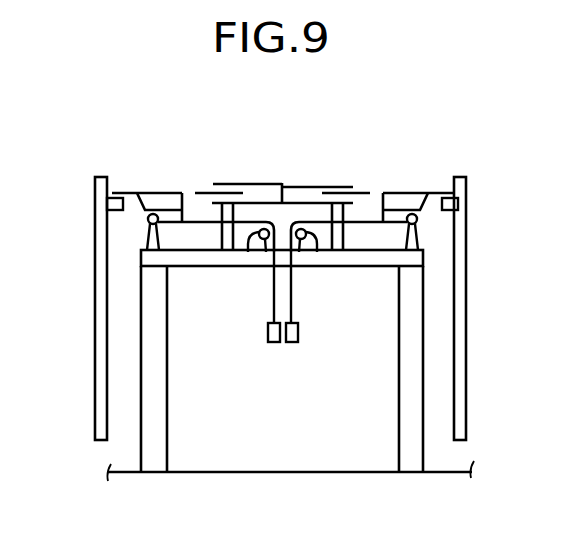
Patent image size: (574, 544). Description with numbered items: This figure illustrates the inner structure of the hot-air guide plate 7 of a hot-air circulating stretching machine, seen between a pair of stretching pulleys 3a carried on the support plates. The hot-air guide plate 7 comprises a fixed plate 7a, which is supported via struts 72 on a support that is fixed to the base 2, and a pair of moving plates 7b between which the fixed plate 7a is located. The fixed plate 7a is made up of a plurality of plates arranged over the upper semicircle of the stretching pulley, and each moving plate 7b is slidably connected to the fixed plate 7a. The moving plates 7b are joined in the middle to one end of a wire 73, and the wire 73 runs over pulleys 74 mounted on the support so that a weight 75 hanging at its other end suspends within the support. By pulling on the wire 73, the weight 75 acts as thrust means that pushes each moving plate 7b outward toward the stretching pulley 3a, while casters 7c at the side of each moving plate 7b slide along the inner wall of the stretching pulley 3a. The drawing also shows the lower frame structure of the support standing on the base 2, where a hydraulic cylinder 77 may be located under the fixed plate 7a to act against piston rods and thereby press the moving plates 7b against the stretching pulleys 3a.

The hot-air guide plate 7 is at (316, 168).
The fixed plate 7a is at (258, 185).
The moving plate 7b is at (155, 193).
The caster 7c is at (118, 203).
The wire 73 is at (197, 222).
The pulley 74 is at (148, 219).
The strut 72 is at (220, 238).
The weight 75 is at (274, 342).
The hydraulic cylinder 77 is at (417, 450).
The stretching pulley 3a is at (100, 388).
The base 2 is at (247, 473).